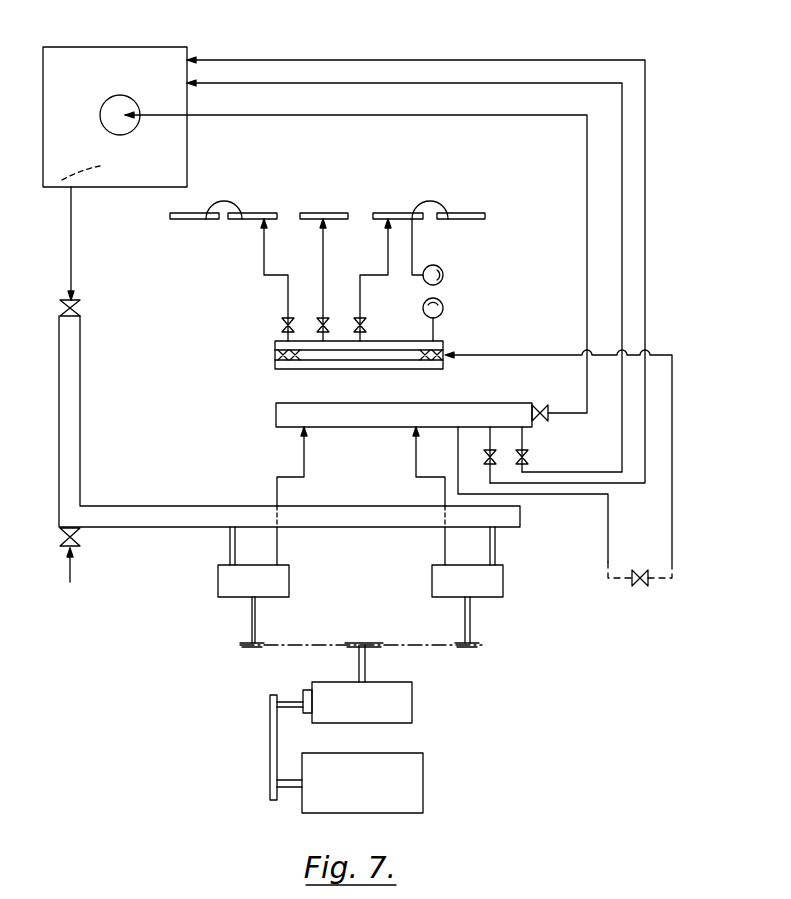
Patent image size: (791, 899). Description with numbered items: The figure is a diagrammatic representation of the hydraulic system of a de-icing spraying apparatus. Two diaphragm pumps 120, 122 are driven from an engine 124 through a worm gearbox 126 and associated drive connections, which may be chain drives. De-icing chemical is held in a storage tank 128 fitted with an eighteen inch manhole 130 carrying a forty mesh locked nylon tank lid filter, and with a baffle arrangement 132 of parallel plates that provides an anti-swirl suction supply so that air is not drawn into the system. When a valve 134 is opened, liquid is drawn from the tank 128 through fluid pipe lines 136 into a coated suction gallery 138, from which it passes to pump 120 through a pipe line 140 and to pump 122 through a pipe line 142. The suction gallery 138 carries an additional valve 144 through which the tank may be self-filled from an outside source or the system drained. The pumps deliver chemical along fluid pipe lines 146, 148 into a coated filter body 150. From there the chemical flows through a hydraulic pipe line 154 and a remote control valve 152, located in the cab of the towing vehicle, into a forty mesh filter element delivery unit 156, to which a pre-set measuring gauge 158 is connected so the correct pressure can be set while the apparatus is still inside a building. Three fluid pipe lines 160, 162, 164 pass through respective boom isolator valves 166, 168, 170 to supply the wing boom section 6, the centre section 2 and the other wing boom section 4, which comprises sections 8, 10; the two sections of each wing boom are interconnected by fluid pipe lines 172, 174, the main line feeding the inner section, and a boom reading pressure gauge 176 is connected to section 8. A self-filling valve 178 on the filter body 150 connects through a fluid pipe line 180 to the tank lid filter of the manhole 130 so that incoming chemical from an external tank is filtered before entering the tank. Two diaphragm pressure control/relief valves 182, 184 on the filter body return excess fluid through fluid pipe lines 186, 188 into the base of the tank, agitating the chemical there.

The centre section 2 is at (321, 213).
The wing boom section 4 is at (412, 190).
The wing boom section 6 is at (258, 190).
The section 8 is at (399, 213).
The section 10 is at (477, 213).
The diaphragm pump 120 is at (225, 585).
The diaphragm pump 122 is at (503, 585).
The engine 124 is at (405, 783).
The worm gearbox 126 is at (398, 700).
The storage tank 128 is at (108, 60).
The manhole 130 is at (103, 108).
The baffle arrangement 132 is at (100, 167).
The valve 134 is at (82, 310).
The fluid pipe lines 136 is at (71, 247).
The suction gallery 138 is at (80, 370).
The pipe line 140 is at (229, 547).
The pipe line 142 is at (497, 545).
The additional valve 144 is at (82, 538).
The fluid pipe line 146 is at (275, 496).
The fluid pipe line 148 is at (444, 497).
The filter body 150 is at (276, 411).
The remote control valve 152 is at (640, 588).
The hydraulic pipe line 154 is at (487, 355).
The filter element delivery unit 156 is at (275, 346).
The measuring gauge 158 is at (444, 306).
The fluid pipe line 160 is at (263, 250).
The fluid pipe line 162 is at (326, 273).
The fluid pipe line 164 is at (360, 293).
The boom isolator valve 166 is at (282, 325).
The boom isolator valve 168 is at (320, 320).
The boom isolator valve 170 is at (366, 324).
The fluid pipe line 172 is at (225, 198).
The fluid pipe line 174 is at (431, 198).
The boom reading pressure gauge 176 is at (441, 268).
The self-filling valve 178 is at (546, 405).
The fluid pipe line 180 is at (587, 152).
The diaphragm pressure control/relief valve 182 is at (484, 457).
The diaphragm pressure control/relief valve 184 is at (530, 457).
The fluid pipe line 186 is at (645, 232).
The fluid pipe line 188 is at (622, 192).